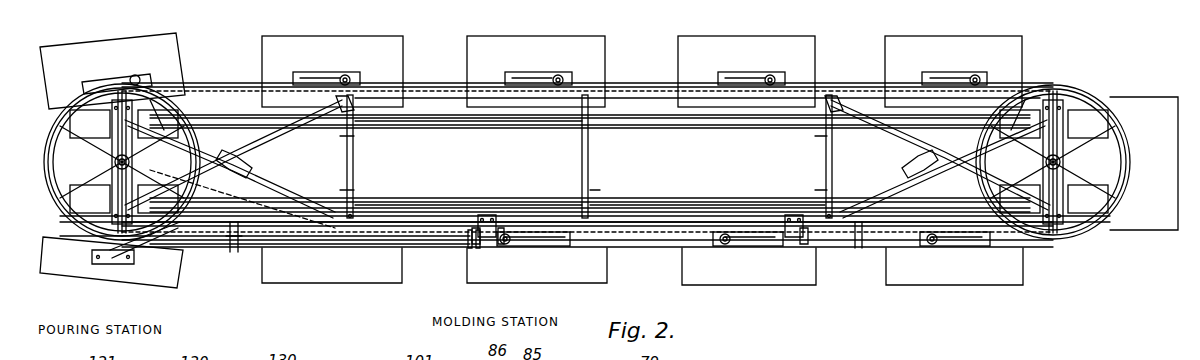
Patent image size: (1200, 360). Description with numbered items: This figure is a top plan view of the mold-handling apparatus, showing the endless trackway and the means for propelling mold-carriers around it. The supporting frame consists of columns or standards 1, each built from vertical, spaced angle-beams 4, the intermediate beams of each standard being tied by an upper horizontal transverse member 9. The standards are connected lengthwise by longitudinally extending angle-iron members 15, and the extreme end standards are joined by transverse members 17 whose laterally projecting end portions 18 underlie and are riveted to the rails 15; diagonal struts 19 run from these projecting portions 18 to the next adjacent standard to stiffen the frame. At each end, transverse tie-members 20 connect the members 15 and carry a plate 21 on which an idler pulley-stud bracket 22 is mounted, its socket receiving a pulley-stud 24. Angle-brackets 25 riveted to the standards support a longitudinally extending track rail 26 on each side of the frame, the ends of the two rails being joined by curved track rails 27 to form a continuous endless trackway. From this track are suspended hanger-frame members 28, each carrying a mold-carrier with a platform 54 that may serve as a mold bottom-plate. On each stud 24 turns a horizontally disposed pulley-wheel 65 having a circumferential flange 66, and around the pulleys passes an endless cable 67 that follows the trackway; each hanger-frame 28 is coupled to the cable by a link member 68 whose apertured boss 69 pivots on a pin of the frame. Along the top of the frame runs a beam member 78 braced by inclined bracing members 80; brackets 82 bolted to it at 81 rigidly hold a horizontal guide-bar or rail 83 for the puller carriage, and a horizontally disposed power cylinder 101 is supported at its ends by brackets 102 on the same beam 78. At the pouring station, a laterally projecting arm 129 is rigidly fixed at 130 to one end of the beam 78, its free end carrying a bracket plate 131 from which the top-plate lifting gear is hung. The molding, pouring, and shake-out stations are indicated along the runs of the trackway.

The column or standard 1 is at (590, 163).
The angle-beam 4 is at (358, 135).
The upper horizontal transverse member 9 is at (588, 146).
The longitudinally extending member 15 is at (520, 130).
The transverse member 17 is at (88, 94).
The laterally projecting end portion 18 is at (110, 96).
The diagonal strut 19 is at (282, 138).
The transverse tie-member 20 is at (144, 116).
The plate 21 is at (169, 240).
The idler pulley-stud bracket 22 is at (164, 112).
The pulley-stud 24 is at (1048, 162).
The angle-bracket 25 is at (392, 88).
The track rail 26 is at (232, 240).
The curved track rail 27 is at (58, 194).
The hanger-frame member 28 is at (112, 94).
The platform 54 is at (176, 52).
The pulley-wheel 65 is at (208, 148).
The circumferential flange 66 is at (198, 190).
The cable 67 is at (453, 86).
The link member 68 is at (340, 78).
The apertured boss 69 is at (568, 250).
The beam member 78 is at (656, 218).
The inclined bracing member 80 is at (356, 162).
The bolt 81 is at (496, 218).
The bracket 82 is at (510, 222).
The guide-bar or rail 83 is at (644, 242).
The power cylinder 101 is at (434, 256).
The bracket 102 is at (258, 240).
The laterally projecting beam or arm 129 is at (158, 254).
The fixing point 130 is at (282, 174).
The bracket plate 131 is at (110, 274).